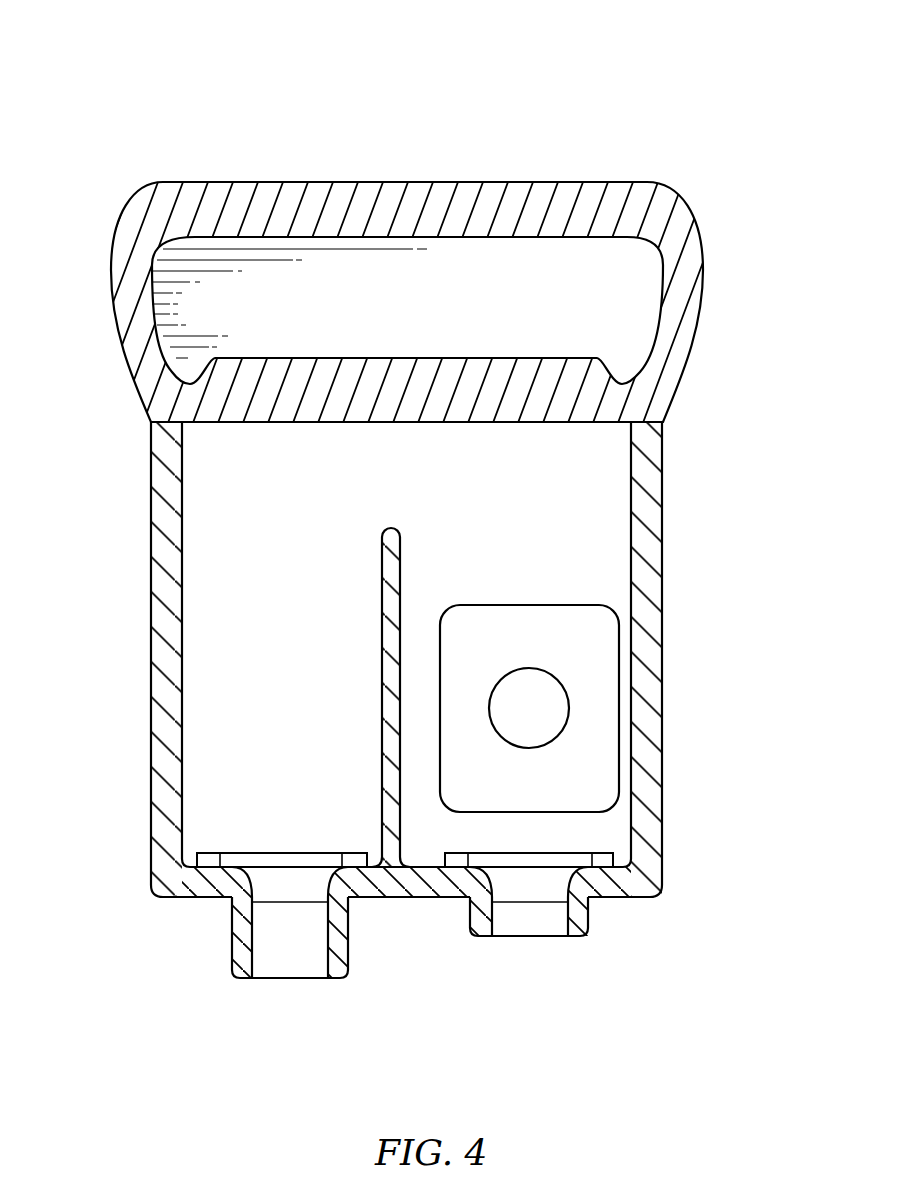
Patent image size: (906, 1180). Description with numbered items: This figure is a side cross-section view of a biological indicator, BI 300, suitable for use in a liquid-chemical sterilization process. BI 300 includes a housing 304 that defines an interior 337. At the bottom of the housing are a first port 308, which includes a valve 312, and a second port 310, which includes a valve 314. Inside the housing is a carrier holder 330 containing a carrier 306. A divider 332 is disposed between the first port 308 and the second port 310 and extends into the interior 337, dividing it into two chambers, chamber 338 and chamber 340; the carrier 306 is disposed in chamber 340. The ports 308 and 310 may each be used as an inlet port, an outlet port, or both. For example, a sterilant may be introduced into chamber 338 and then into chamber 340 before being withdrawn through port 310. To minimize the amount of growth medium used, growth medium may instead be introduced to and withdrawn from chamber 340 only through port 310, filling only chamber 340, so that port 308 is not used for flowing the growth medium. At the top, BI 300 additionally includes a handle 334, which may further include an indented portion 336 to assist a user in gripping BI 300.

The biological indicator 300 is at (636, 43).
The housing 304 is at (151, 502).
The carrier 306 is at (569, 708).
The first port 308 is at (232, 938).
The second port 310 is at (590, 918).
The valve 312 is at (208, 853).
The valve 314 is at (602, 853).
The carrier holder 330 is at (611, 607).
The divider 332 is at (382, 628).
The handle 334 is at (254, 182).
The indented portion 336 is at (376, 272).
The interior 337 is at (463, 463).
The chamber 338 is at (209, 667).
The chamber 340 is at (587, 534).